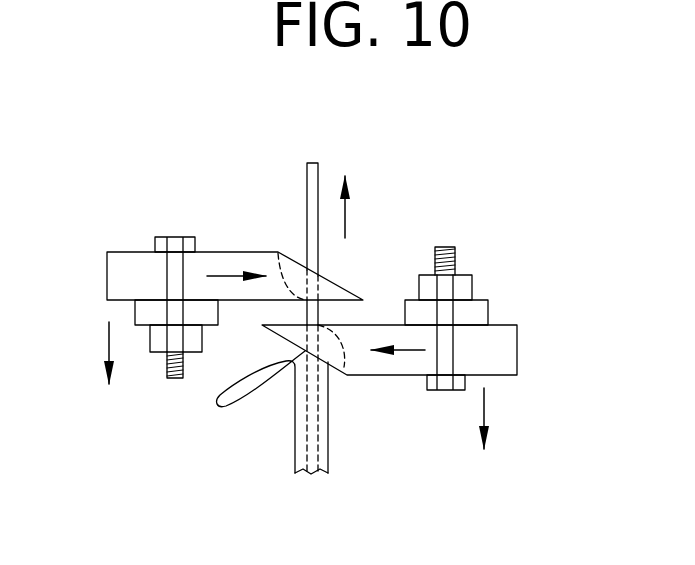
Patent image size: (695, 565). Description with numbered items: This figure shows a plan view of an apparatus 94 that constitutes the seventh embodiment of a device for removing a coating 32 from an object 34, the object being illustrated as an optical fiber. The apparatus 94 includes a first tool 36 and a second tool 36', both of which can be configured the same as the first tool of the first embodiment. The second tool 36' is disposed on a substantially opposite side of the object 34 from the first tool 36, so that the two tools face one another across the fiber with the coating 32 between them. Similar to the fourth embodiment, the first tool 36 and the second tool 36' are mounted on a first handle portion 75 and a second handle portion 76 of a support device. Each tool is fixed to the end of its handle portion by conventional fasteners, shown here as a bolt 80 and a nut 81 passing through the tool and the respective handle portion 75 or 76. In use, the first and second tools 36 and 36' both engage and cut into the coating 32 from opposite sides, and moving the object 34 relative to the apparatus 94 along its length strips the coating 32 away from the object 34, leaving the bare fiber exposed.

The apparatus 94 is at (580, 172).
The bolt 80 is at (174, 237).
The object 34 is at (307, 190).
The nut 81 is at (195, 352).
The first handle portion 75 is at (478, 313).
The second tool 36' is at (190, 313).
The second handle portion 76 is at (145, 313).
The first tool 36 is at (427, 387).
The coating 32 is at (330, 430).